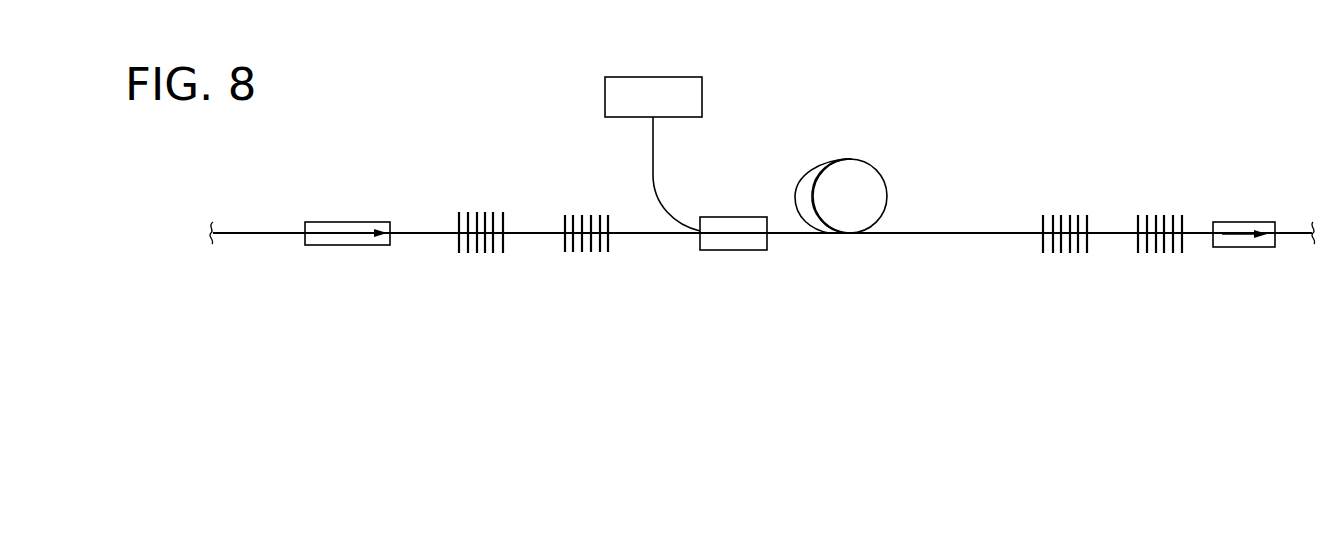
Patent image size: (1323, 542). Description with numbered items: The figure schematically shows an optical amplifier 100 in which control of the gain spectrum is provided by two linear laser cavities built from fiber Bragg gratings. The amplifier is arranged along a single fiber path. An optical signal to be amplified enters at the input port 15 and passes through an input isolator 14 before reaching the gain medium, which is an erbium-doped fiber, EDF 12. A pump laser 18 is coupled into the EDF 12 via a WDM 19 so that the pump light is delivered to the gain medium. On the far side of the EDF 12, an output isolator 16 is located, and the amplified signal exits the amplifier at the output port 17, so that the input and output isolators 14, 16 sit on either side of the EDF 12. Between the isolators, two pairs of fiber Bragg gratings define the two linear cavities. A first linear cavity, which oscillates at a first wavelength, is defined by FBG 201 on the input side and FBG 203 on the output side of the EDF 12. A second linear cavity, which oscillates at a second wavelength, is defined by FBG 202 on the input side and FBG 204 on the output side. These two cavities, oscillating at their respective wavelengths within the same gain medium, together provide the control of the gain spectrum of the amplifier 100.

The optical amplifier 100 is at (312, 328).
The input port 15 is at (258, 232).
The input isolator 14 is at (336, 222).
The FBG (Fiber Bragg Grating) 201 is at (500, 272).
The FBG (Fiber Bragg Grating) 202 is at (571, 215).
The pump laser 18 is at (663, 77).
The WDM 19 is at (727, 217).
The EDF 12 is at (872, 165).
The FBG (Fiber Bragg Grating) 203 is at (1085, 280).
The FBG (Fiber Bragg Grating) 204 is at (1150, 222).
The output isolator 16 is at (1243, 222).
The output port 17 is at (1293, 233).